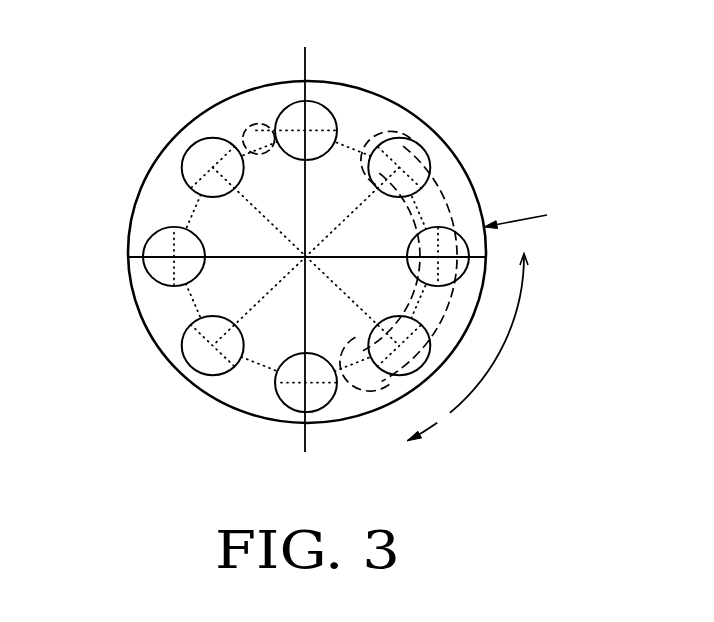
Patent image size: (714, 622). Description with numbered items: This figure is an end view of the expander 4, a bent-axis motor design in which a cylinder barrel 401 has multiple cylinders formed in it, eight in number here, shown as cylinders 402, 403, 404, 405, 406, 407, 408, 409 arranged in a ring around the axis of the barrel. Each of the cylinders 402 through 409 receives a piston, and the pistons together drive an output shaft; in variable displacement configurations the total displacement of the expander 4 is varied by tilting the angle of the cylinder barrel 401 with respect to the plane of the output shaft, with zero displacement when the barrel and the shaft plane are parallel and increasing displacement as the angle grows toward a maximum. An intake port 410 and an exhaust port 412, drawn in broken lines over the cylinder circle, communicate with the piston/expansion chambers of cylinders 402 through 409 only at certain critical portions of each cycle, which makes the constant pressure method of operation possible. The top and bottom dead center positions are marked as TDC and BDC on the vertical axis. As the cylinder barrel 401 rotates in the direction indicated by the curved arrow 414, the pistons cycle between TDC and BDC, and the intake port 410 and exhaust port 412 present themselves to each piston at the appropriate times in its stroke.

The cylinder barrel 401 is at (152, 323).
The cylinder 402 is at (329, 113).
The cylinder 403 is at (183, 160).
The cylinder 404 is at (143, 243).
The cylinder 405 is at (180, 354).
The cylinder 406 is at (278, 395).
The cylinder 407 is at (427, 363).
The cylinder 408 is at (463, 232).
The cylinder 409 is at (402, 140).
The intake port 410 is at (257, 122).
The exhaust port 412 is at (439, 192).
The direction of rotation 414 is at (516, 323).
The expander 4 is at (526, 213).